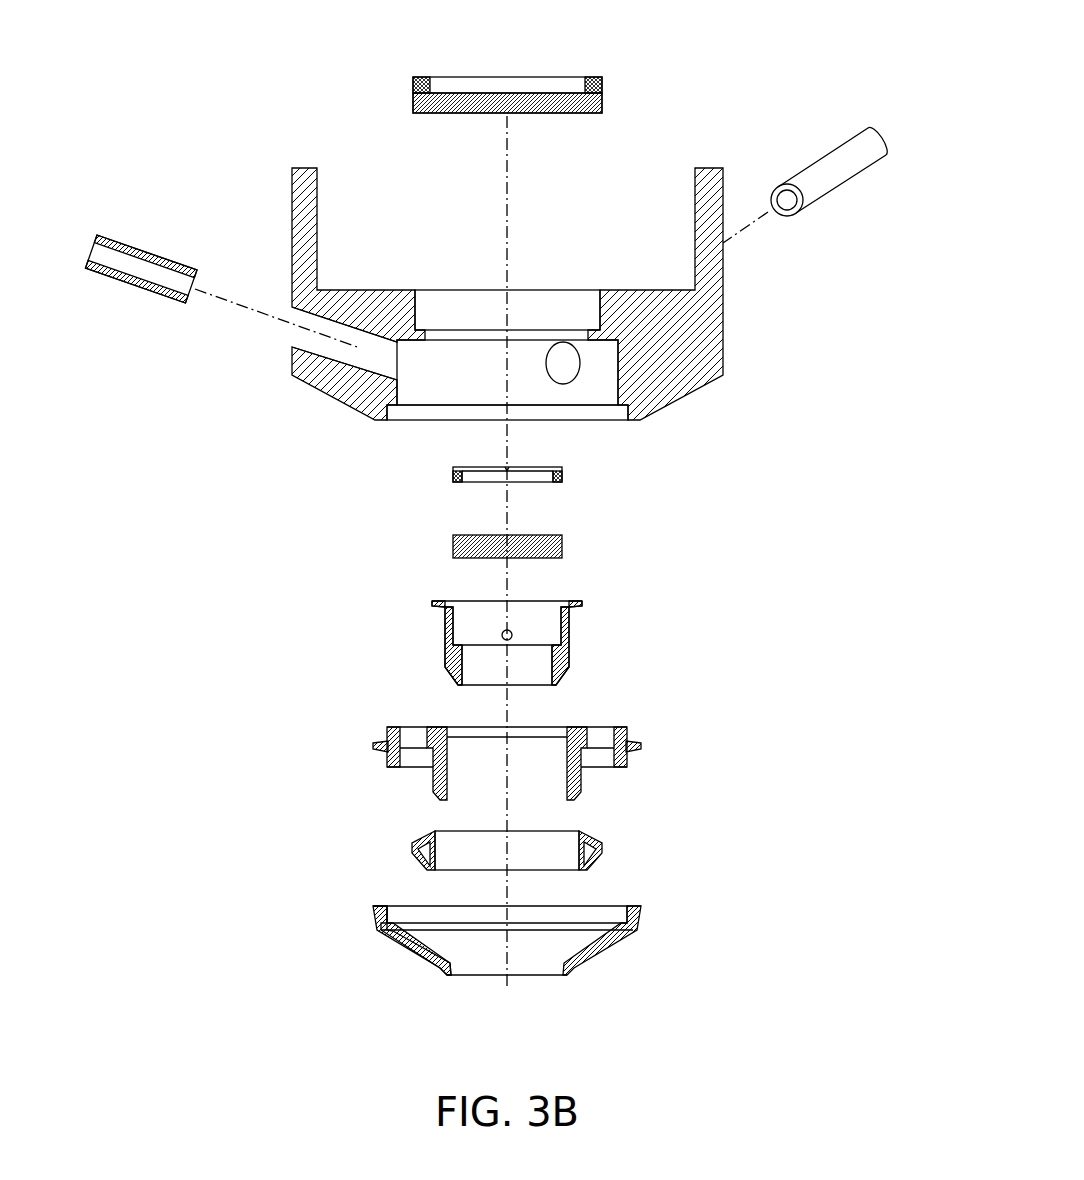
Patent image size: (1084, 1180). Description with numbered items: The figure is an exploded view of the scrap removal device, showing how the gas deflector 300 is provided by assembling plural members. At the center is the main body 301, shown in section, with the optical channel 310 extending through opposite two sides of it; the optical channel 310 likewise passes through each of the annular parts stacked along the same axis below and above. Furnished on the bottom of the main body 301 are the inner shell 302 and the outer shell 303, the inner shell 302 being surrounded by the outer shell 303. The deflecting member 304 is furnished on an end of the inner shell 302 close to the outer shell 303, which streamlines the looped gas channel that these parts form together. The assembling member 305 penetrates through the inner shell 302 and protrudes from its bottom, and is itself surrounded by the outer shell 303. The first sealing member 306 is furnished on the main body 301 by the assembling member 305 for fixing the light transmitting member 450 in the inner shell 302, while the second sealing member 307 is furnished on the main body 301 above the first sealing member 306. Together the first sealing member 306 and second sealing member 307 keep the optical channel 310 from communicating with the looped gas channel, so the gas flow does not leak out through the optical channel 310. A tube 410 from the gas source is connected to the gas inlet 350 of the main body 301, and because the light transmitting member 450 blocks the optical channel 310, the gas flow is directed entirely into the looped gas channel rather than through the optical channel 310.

The gas deflector 300 is at (487, 501).
The main body 301 is at (551, 312).
The inner shell 302 is at (628, 733).
The outer shell 303 is at (643, 920).
The deflecting member 304 is at (606, 840).
The assembling member 305 is at (585, 661).
The first sealing member 306 is at (563, 470).
The second sealing member 307 is at (545, 85).
The optical channel 310 is at (572, 305).
The gas inlet 350 is at (348, 356).
The tube 410 is at (830, 158).
The light transmitting member 450 is at (563, 547).